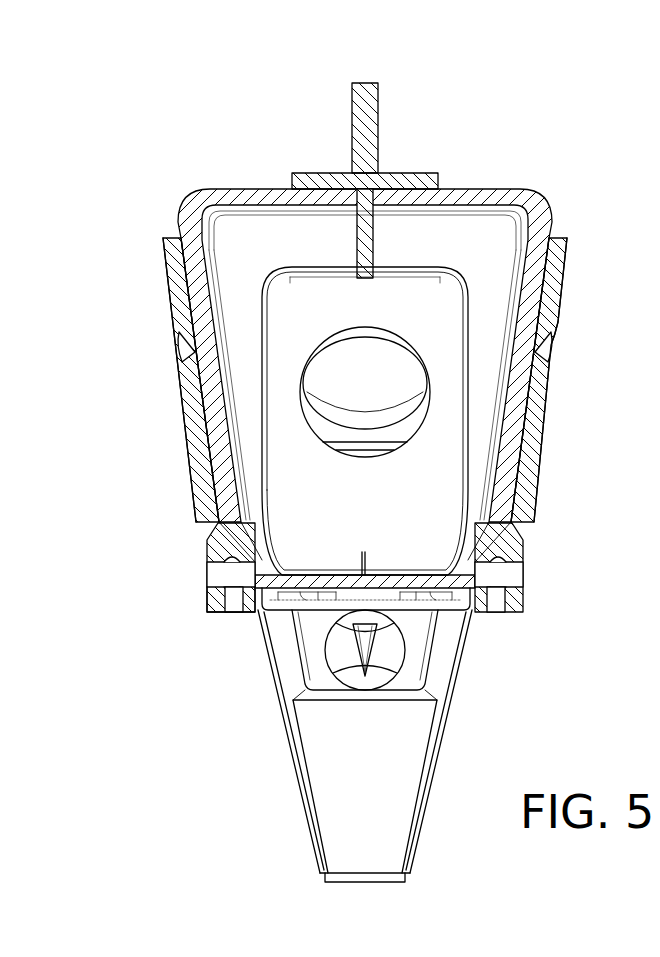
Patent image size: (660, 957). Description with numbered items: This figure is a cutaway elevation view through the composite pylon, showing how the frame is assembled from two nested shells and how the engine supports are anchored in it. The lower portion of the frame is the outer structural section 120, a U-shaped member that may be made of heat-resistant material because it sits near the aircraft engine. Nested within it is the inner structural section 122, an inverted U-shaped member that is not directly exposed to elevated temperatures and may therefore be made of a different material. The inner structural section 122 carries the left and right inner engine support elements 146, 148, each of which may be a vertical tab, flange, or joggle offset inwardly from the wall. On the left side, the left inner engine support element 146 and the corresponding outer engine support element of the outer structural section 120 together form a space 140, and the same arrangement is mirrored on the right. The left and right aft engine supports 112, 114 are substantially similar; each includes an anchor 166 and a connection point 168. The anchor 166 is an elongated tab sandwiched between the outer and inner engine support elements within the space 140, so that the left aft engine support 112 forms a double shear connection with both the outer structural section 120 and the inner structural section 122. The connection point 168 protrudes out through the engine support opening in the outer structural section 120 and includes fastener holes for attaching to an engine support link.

The inner structural section 122 is at (463, 168).
The outer structural section 120 is at (160, 294).
The space 140 is at (176, 340).
The left inner engine support element 146 is at (178, 412).
The right inner engine support element 148 is at (548, 415).
The anchor 166 is at (203, 452).
The left aft engine support 112 is at (198, 527).
The right aft engine support 114 is at (532, 528).
The connection point 168 is at (198, 606).